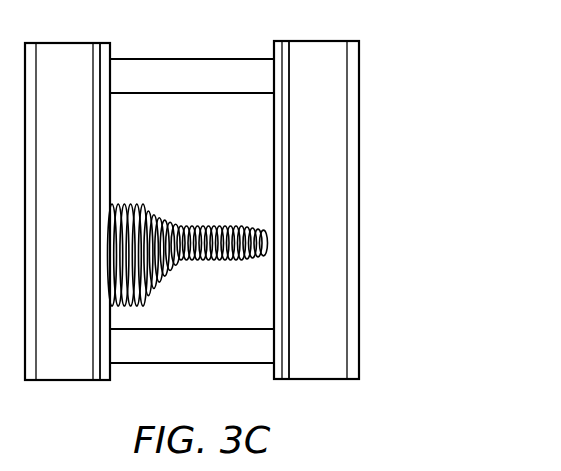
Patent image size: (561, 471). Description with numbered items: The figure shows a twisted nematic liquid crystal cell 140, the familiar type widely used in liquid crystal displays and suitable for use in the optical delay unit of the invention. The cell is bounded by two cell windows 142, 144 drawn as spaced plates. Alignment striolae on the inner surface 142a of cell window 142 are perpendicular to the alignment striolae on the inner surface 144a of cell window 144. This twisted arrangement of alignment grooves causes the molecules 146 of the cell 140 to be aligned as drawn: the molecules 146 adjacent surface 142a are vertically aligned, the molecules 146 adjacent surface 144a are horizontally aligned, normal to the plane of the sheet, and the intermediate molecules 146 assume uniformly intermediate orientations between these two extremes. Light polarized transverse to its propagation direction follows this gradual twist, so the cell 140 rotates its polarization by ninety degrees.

The twisted nematic liquid crystal cell 140 is at (416, 119).
The cell window 142 is at (67, 57).
The inner surface of cell window 142a is at (109, 112).
The cell window 144 is at (322, 50).
The inner surface of cell window 144a is at (272, 150).
The molecules 146 is at (178, 261).